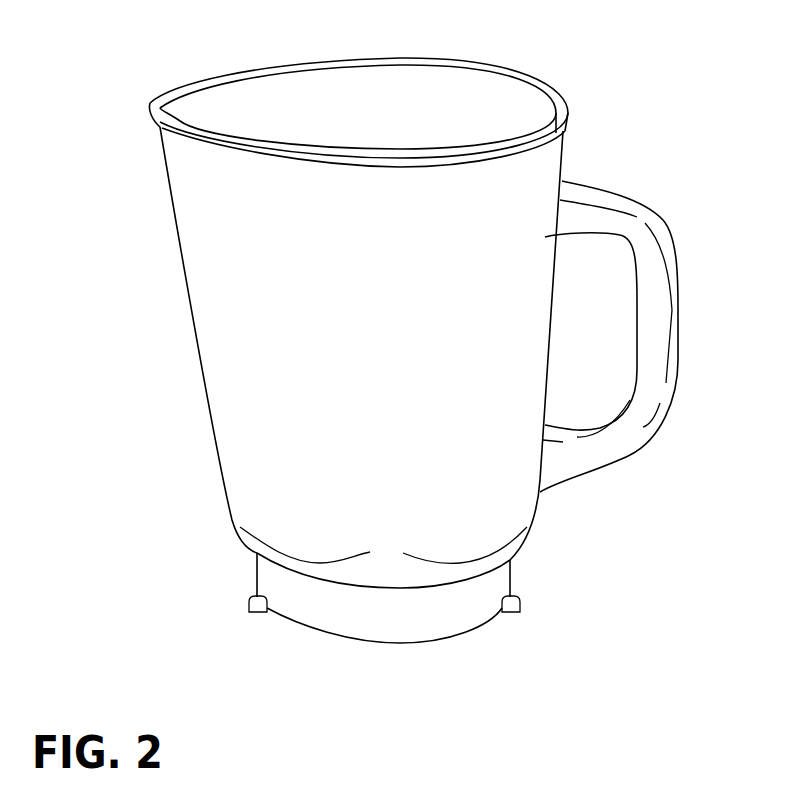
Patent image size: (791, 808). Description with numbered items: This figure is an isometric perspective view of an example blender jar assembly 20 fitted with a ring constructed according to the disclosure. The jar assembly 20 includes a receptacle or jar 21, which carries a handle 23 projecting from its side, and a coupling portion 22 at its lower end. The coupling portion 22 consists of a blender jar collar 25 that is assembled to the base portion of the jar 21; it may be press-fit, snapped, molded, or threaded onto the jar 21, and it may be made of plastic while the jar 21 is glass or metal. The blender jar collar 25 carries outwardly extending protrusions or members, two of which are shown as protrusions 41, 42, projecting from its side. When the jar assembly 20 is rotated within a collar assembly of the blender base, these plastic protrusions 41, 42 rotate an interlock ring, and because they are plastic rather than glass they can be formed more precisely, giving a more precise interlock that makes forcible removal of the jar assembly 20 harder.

The jar assembly 20 is at (152, 37).
The jar 21 is at (235, 266).
The coupling portion 22 is at (240, 579).
The handle 23 is at (597, 190).
The blender jar collar 25 is at (373, 618).
The protrusion 41 is at (253, 613).
The protrusion 42 is at (513, 613).